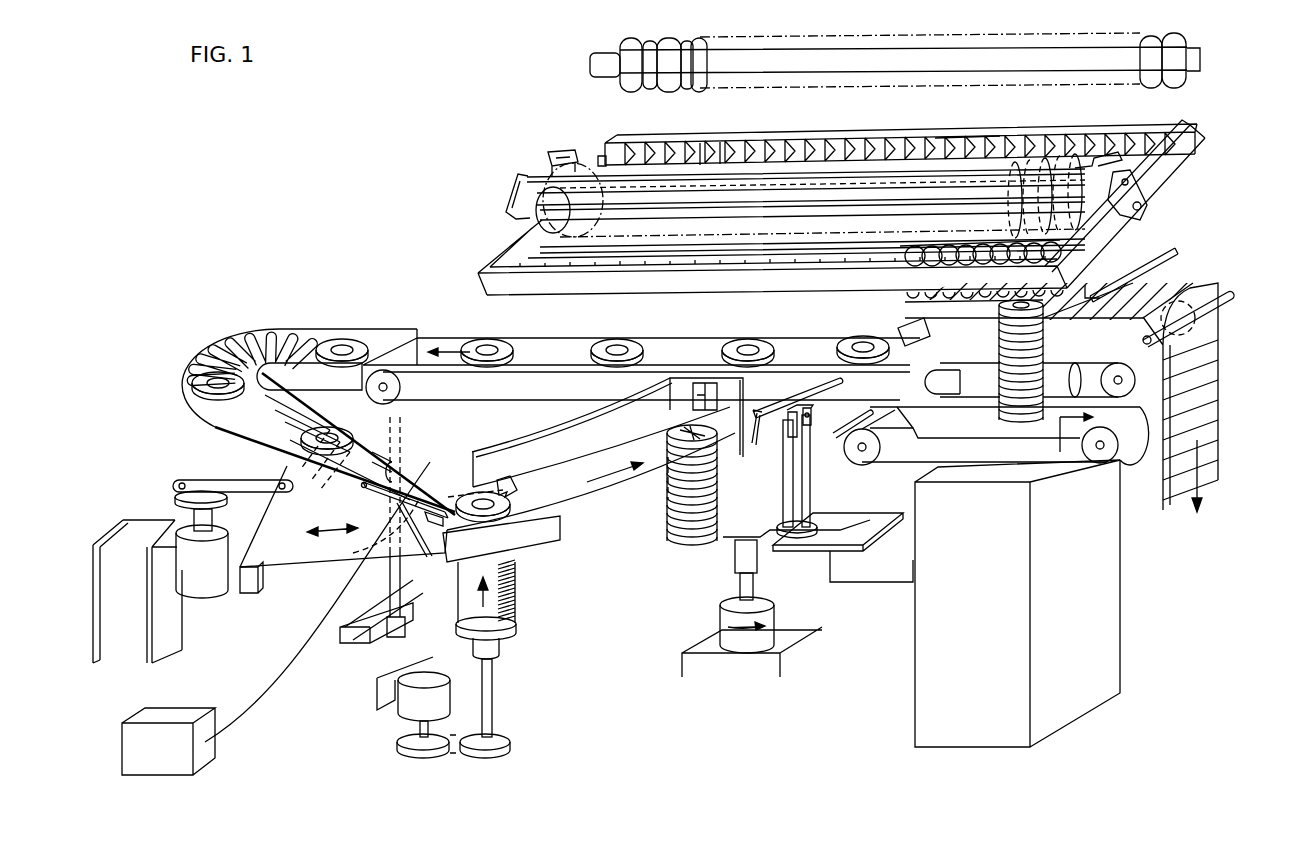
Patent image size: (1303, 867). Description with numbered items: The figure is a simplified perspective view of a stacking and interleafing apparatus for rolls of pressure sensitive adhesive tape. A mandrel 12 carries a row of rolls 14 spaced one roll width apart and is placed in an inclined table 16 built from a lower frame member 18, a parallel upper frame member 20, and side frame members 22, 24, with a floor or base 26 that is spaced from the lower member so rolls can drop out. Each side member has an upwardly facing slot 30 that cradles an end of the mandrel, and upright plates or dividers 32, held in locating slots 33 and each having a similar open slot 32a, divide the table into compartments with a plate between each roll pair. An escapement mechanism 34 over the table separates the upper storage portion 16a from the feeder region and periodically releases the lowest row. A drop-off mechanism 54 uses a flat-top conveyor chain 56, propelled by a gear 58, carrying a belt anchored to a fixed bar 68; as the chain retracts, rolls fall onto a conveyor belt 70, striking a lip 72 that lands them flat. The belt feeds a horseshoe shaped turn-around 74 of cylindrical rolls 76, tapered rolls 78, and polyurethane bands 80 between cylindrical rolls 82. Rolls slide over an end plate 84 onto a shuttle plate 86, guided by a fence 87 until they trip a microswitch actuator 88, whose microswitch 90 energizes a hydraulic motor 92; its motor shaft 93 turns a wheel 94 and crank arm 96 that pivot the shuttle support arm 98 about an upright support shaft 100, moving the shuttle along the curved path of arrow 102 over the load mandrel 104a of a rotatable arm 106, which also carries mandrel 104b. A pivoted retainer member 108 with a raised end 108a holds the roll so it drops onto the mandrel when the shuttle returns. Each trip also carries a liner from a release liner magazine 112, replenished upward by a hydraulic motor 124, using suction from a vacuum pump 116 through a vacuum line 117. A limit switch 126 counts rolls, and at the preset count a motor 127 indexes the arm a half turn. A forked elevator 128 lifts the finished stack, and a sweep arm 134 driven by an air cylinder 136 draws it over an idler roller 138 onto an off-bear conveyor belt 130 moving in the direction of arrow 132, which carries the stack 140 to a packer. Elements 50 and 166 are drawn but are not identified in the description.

The mandrel 12 is at (610, 50).
The rolls of pressure sensitive adhesive tape 14 is at (675, 44).
The inclined table 16 is at (545, 128).
The upper storage portion 16a is at (940, 150).
The lower frame member 18 is at (600, 288).
The upper frame member 20 is at (795, 138).
The side frame member 22 is at (525, 234).
The side frame member 24 is at (1176, 176).
The floor or base 26 is at (530, 248).
The slot 30 is at (598, 156).
The plates or dividers 32 is at (1157, 160).
The open slot 32a is at (1040, 158).
The locating slot 33 is at (722, 152).
The escapement mechanism 34 is at (504, 191).
The clip 50 is at (547, 160).
The drop-off mechanism 54 is at (1235, 268).
The flat-top conveyor chain 56 is at (1220, 368).
The gear 58 is at (1215, 311).
The fixed bar 68 is at (1160, 275).
The conveyor belt 70 is at (557, 363).
The lip 72 is at (905, 335).
The horseshoe shaped turn-around 74 is at (250, 329).
The cylindrical rolls 76 is at (360, 347).
The tapered rolls 78 is at (222, 366).
The polyurethane bands 80 is at (280, 429).
The cylindrical rolls 82 is at (262, 415).
The end plate 84 is at (442, 461).
The shuttle plate 86 is at (497, 485).
The fence 87 is at (375, 499).
The microswitch actuator 88 is at (486, 557).
The microswitch 90 is at (393, 540).
The hydraulic motor 92 is at (213, 565).
The motor shaft 93 is at (194, 520).
The wheel 94 is at (185, 496).
The crank arm 96 is at (240, 482).
The shuttle support arm 98 is at (328, 507).
The upright support shaft 100 is at (390, 575).
The arrow 102 is at (586, 499).
The load mandrel 104a is at (690, 430).
The mandrel 104b is at (790, 469).
The rotatable arm 106 is at (735, 559).
The pivoted retainer member 108 is at (816, 407).
The raised end 108a is at (755, 410).
The release liner magazine 112 is at (460, 605).
The vacuum pump 116 is at (178, 718).
The vacuum line 117 is at (296, 660).
The hydraulic motor 124 is at (447, 713).
The limit switch 126 is at (700, 383).
The motor 127 is at (720, 611).
The forked elevator 128 is at (783, 549).
The off-bear conveyor belt 130 is at (933, 418).
The arrow 132 is at (1060, 450).
The sweep arm 134 is at (813, 395).
The air cylinder 136 is at (932, 372).
The idler roller 138 is at (835, 442).
The stack 140 is at (1045, 346).
The ring row 166 is at (1072, 239).